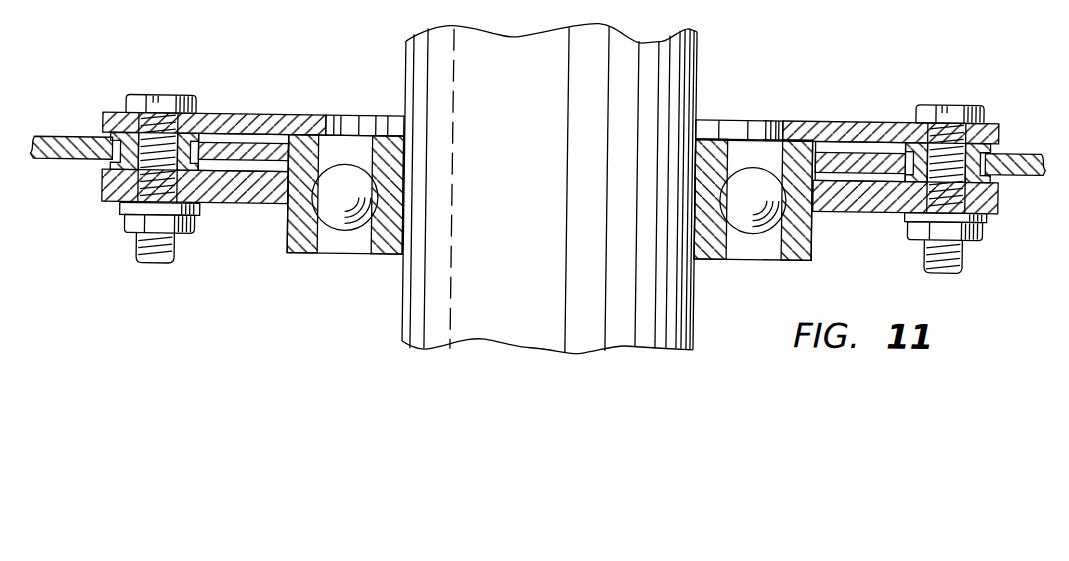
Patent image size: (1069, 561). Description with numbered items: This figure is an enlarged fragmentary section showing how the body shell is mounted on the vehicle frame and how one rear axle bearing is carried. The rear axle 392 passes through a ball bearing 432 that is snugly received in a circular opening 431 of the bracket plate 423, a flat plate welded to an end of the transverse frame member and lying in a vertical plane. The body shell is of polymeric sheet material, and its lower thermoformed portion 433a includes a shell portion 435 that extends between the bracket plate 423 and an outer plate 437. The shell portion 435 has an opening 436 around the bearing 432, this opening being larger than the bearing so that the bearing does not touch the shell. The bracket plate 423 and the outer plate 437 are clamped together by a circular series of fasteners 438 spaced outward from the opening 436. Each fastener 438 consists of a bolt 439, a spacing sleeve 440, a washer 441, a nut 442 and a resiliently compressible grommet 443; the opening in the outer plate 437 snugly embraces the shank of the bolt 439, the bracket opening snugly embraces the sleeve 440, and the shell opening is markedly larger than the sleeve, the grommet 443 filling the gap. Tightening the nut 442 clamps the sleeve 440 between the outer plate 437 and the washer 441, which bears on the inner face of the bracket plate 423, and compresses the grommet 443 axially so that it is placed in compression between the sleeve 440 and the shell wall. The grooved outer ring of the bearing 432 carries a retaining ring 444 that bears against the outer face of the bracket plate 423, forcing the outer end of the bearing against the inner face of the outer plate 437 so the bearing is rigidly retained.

The rear axle 392 is at (490, 94).
The bracket plate 423 is at (905, 227).
The circular opening 431 is at (285, 217).
The ball bearing 432 is at (797, 263).
The lower thermoformed portion 433a is at (548, 130).
The shell portion 435 is at (1023, 149).
The opening 436 is at (840, 161).
The outer plate 437 is at (797, 119).
The fastener 438 is at (178, 93).
The bolt 439 is at (933, 102).
The spacing sleeve 440 is at (993, 181).
The washer 441 is at (987, 212).
The nut 442 is at (982, 232).
The resiliently compressible grommet 443 is at (838, 211).
The retaining ring 444 is at (268, 174).